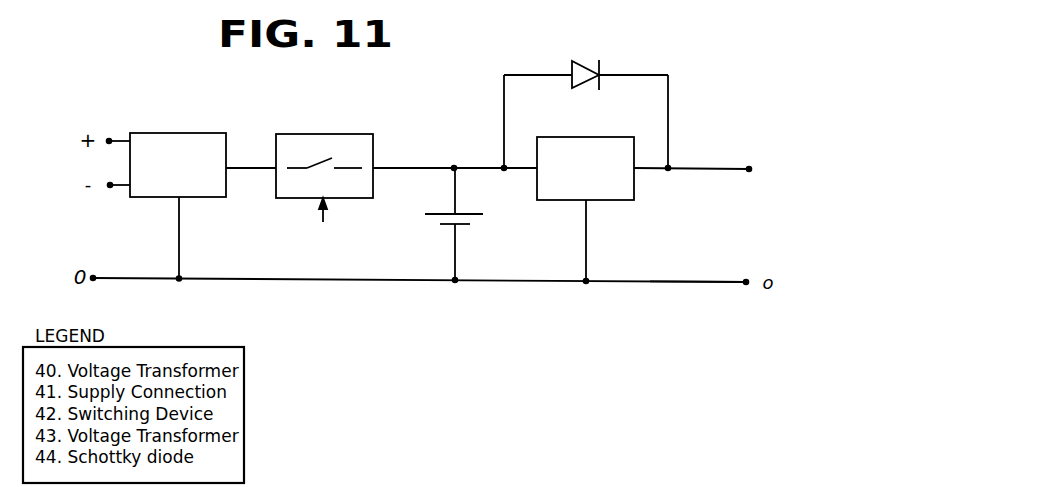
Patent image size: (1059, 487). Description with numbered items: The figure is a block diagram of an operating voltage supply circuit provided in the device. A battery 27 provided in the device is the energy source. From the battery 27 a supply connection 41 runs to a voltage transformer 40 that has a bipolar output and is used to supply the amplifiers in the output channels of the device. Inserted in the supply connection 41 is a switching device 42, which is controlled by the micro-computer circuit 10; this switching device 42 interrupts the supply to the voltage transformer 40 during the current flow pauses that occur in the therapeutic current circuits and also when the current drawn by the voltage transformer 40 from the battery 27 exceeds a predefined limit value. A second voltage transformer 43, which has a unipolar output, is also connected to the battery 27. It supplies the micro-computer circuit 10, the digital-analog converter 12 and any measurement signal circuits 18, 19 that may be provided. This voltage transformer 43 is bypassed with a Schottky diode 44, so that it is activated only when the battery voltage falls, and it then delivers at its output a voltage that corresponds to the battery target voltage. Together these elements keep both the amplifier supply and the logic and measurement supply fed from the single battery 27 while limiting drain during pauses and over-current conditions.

The voltage transformer 40 is at (209, 187).
The supply connection 41 is at (255, 162).
The switching device 42 is at (357, 143).
The voltage transformer 43 is at (565, 192).
The Schottky diode 44 is at (587, 57).
The micro-computer circuit 10 is at (543, 221).
The battery 27 is at (433, 220).
The digital-analog converter 12 is at (712, 222).
The measurement signal circuits 18 is at (737, 252).
The measurement signal circuits 19 is at (727, 252).